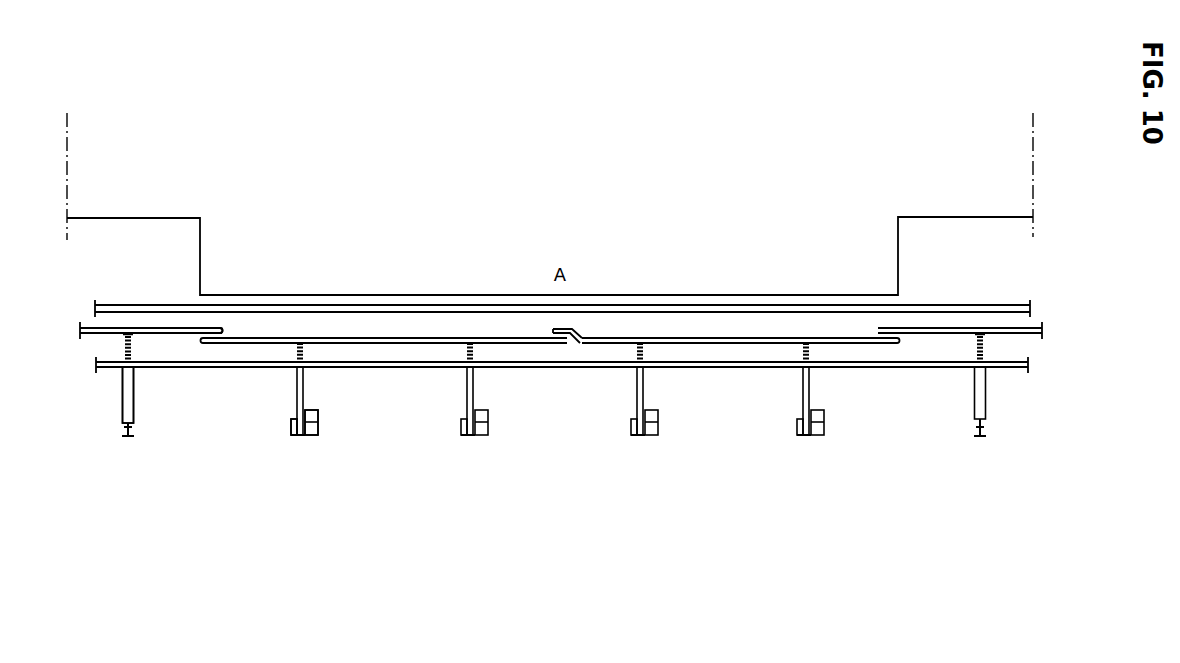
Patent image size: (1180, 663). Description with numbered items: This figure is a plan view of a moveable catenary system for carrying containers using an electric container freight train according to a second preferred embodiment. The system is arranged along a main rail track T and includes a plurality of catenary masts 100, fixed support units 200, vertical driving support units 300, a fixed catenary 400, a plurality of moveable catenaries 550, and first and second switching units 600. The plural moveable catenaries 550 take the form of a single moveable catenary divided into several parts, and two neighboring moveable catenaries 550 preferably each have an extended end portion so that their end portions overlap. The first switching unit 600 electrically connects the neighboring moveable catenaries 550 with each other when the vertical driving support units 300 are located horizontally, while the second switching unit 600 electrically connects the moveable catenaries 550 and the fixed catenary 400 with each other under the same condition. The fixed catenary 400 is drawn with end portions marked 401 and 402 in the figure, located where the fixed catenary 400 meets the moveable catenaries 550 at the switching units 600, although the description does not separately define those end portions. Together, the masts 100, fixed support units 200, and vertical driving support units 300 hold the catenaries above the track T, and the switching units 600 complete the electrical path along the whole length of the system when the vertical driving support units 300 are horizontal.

The catenary mast 100 is at (128, 442).
The fixed support unit 200 is at (138, 398).
The vertical driving support unit 300 is at (289, 398).
The fixed catenary 400 is at (90, 338).
The right plate end 401 is at (893, 333).
The left plate end 402 is at (218, 330).
The moveable catenary 550 is at (408, 345).
The switching unit 600 is at (178, 330).
The main rail track T is at (552, 372).